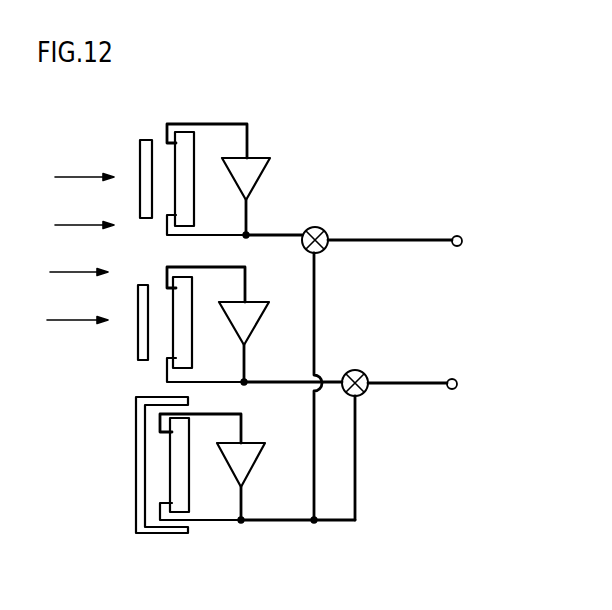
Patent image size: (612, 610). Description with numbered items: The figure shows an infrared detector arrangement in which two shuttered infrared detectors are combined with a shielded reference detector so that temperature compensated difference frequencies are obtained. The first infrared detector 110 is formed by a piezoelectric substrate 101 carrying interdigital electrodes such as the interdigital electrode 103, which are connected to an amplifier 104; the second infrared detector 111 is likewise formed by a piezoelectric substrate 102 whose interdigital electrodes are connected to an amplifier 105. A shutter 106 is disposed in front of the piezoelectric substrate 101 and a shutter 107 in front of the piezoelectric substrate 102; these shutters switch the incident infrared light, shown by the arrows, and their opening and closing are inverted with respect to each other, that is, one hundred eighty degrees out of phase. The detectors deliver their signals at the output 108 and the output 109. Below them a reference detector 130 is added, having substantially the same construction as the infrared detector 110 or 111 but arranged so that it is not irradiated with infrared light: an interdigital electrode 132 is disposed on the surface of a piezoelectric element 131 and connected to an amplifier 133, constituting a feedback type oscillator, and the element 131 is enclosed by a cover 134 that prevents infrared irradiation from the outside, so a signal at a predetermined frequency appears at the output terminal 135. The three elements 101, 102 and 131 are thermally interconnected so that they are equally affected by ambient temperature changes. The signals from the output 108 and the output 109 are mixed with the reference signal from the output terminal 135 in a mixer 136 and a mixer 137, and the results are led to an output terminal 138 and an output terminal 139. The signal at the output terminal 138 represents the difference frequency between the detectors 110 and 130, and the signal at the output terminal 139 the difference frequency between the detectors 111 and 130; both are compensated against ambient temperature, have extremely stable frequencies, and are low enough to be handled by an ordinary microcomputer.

The piezoelectric substrate 101 is at (189, 133).
The piezoelectric substrate 102 is at (184, 362).
The interdigital electrode 103 is at (173, 133).
The amplifier 104 is at (258, 155).
The amplifier 105 is at (252, 307).
The shutter 106 is at (146, 141).
The shutter 107 is at (143, 286).
The output 108 is at (250, 232).
The output 109 is at (247, 380).
The infrared detector 110 is at (320, 113).
The infrared detector 111 is at (300, 318).
The reference detector 130 is at (283, 554).
The piezoelectric element 131 is at (182, 505).
The interdigital electrode 132 is at (166, 505).
The amplifier 133 is at (249, 447).
The cover 134 is at (137, 533).
The output terminal 135 is at (243, 518).
The mixer 136 is at (327, 231).
The mixer 137 is at (363, 369).
The output terminal 138 is at (463, 238).
The output terminal 139 is at (458, 380).